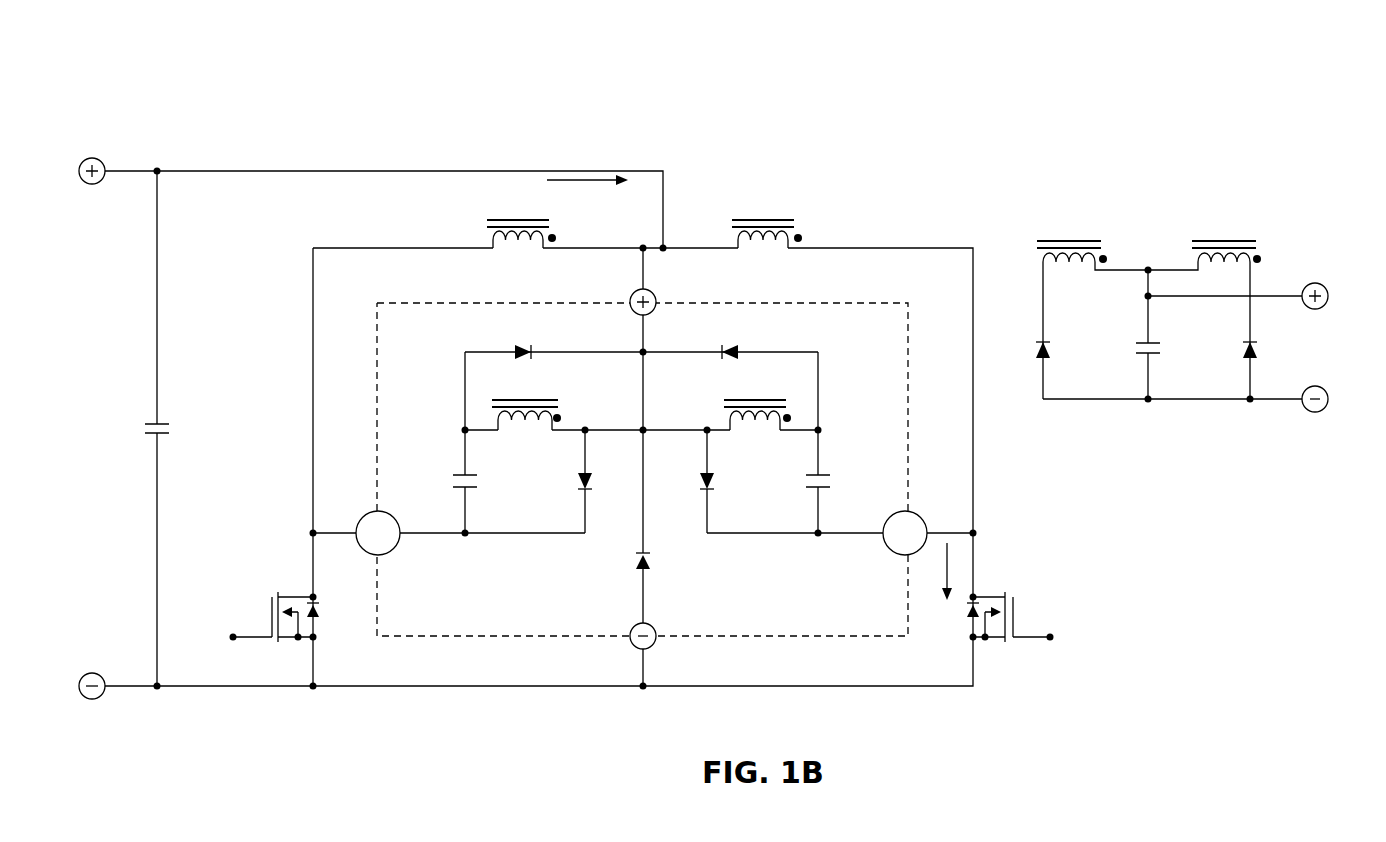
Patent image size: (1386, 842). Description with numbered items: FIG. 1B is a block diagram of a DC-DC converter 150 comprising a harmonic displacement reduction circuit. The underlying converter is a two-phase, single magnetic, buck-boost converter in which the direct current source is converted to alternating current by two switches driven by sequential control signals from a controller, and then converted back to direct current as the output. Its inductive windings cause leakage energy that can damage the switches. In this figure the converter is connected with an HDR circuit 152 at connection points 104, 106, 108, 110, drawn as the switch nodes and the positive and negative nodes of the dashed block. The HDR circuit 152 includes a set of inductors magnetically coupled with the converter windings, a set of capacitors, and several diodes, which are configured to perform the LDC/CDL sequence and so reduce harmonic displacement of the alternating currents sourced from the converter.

The power converter circuit 150 is at (172, 106).
The HDR circuit 152 is at (865, 302).
The connection point 104 is at (391, 512).
The connection point 106 is at (657, 308).
The connection point 108 is at (903, 510).
The connection point 110 is at (656, 631).